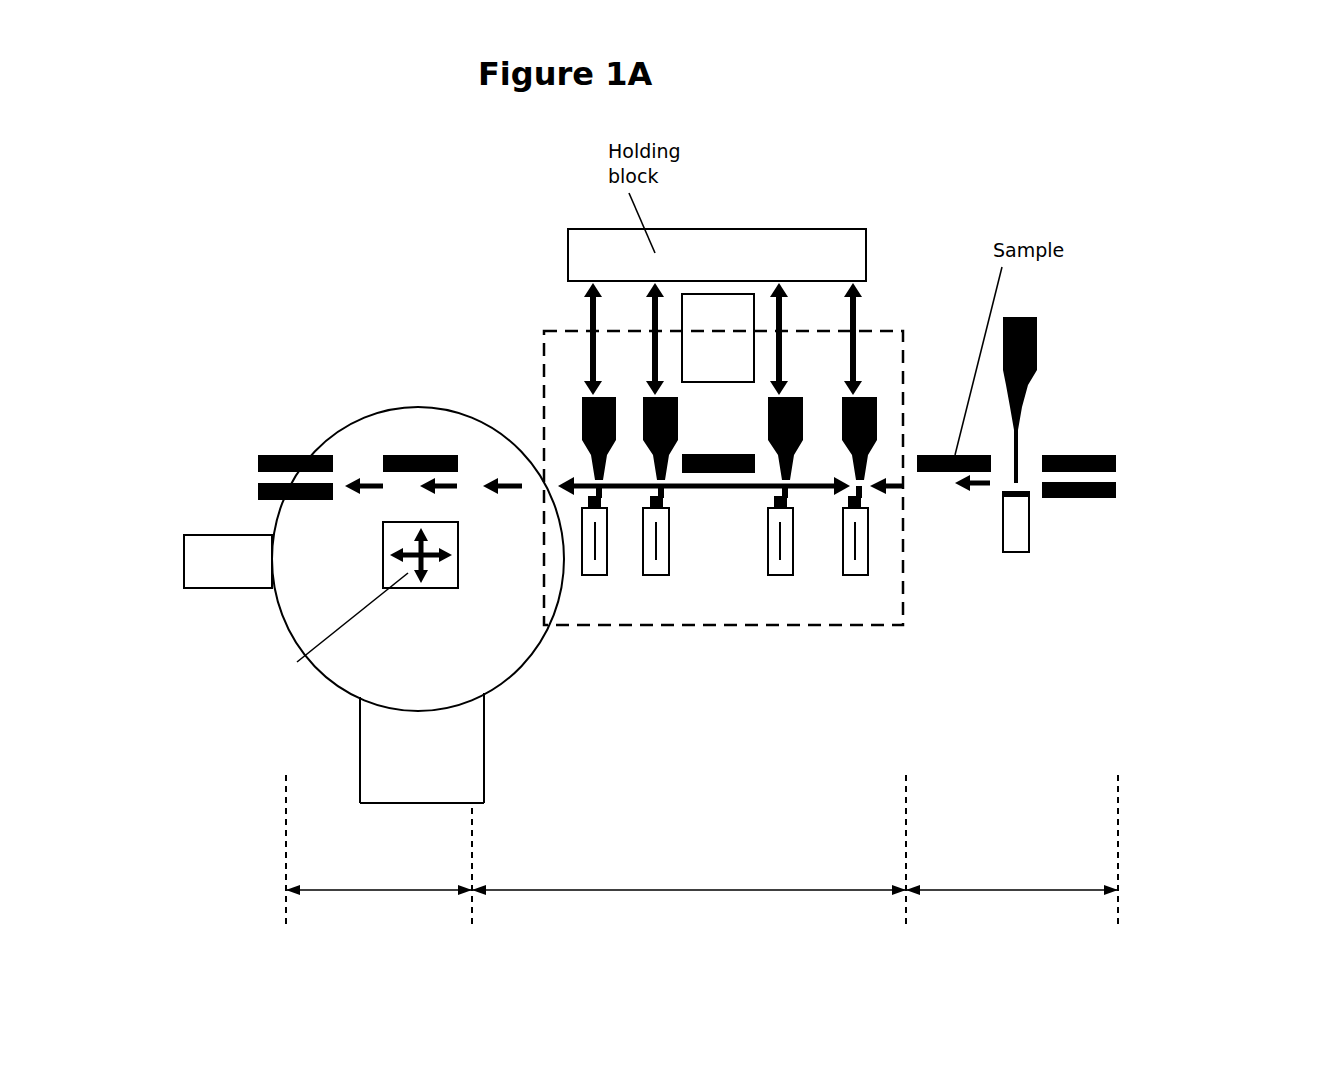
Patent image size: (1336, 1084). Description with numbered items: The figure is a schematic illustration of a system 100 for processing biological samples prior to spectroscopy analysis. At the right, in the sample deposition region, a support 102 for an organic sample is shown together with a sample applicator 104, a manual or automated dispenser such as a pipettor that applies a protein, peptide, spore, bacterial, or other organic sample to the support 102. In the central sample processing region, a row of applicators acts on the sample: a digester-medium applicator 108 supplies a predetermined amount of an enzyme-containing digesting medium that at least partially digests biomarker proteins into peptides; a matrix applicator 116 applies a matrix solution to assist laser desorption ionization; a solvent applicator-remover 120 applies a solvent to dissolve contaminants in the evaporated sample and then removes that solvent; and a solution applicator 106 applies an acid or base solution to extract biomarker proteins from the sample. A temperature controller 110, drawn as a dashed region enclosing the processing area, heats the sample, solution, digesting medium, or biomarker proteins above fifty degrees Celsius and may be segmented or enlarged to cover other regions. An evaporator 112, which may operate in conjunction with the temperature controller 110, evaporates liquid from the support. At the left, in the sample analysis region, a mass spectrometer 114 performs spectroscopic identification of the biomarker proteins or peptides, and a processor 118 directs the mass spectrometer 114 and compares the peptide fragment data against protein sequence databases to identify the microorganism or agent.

The system 100 is at (707, 508).
The support 102 is at (1117, 470).
The sample applicator 104 is at (1029, 522).
The solution applicator 106 is at (868, 575).
The digester-medium applicator 108 is at (603, 575).
The temperature controller 110 is at (542, 357).
The evaporator 112 is at (718, 330).
The mass spectrometer 114 is at (383, 435).
The matrix applicator 116 is at (668, 575).
The processor 118 is at (233, 548).
The solvent applicator-remover 120 is at (790, 575).